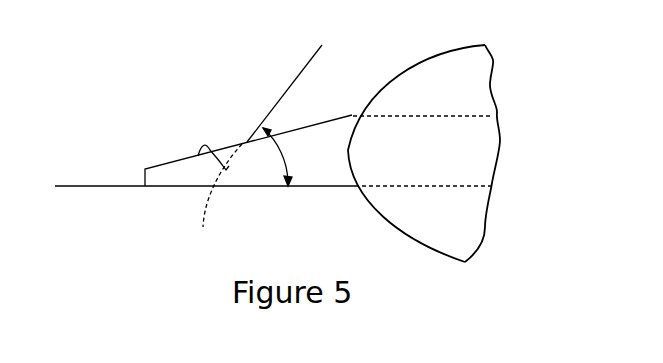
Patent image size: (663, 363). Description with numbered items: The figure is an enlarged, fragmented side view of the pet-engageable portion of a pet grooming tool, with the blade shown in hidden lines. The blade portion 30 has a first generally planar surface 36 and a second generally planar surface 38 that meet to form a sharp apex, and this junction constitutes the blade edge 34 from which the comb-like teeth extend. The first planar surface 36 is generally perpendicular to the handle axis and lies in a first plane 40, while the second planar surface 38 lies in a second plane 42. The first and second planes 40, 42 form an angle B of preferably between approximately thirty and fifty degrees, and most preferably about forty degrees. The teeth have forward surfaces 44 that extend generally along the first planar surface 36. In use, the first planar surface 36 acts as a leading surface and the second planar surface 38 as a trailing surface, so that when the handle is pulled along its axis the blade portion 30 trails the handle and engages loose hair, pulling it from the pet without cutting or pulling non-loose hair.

The blade portion 30 is at (226, 160).
The blade edge 34 is at (216, 203).
The first generally planar surface 36 is at (318, 187).
The second generally planar surface 38 is at (195, 155).
The first plane 40 is at (90, 187).
The second plane 42 is at (312, 60).
The forward surfaces 44 is at (177, 187).
The angle B is at (284, 153).